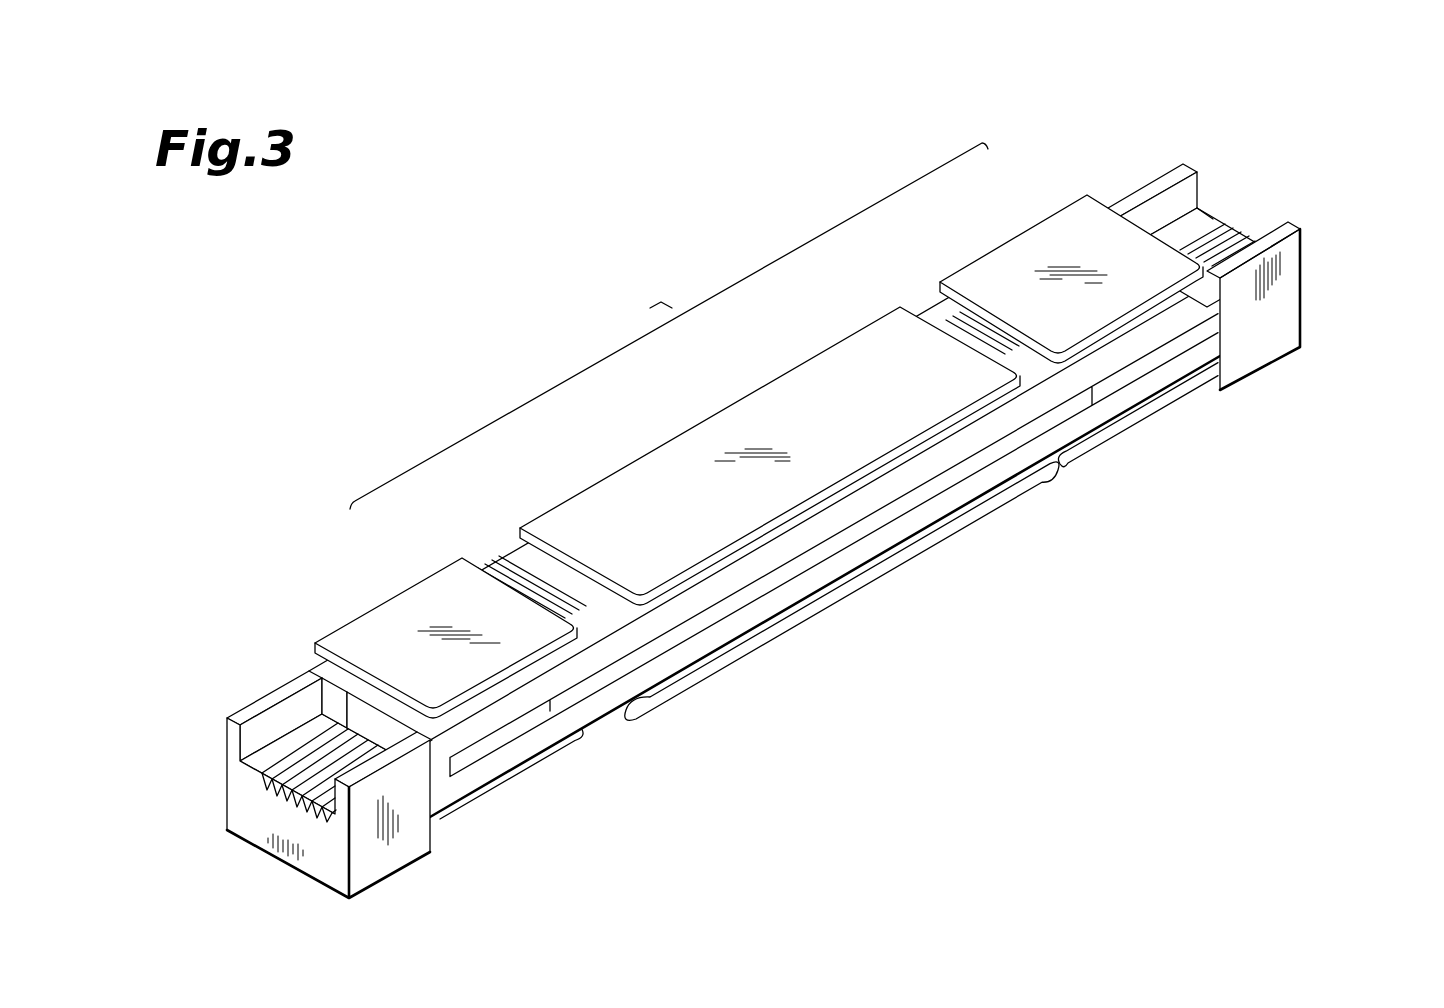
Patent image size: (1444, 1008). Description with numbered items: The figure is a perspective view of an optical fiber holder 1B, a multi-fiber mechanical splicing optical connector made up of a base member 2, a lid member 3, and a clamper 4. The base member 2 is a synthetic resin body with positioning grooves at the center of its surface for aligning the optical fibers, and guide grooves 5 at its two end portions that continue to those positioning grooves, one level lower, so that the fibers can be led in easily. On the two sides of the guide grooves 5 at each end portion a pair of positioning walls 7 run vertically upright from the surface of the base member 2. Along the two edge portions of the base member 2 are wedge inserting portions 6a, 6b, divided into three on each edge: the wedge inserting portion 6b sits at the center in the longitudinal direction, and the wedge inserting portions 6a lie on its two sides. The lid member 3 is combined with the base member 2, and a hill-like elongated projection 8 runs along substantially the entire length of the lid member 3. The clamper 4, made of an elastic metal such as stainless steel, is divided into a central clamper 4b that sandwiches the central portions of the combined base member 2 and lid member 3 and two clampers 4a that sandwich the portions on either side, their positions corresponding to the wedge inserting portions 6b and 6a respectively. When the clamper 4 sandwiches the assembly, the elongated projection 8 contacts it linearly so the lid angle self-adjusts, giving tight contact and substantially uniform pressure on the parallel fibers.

The holder 1B is at (816, 487).
The base member 2 is at (1018, 455).
The lid member 3 is at (1052, 393).
The clamper 4 is at (669, 326).
The clampers 4a is at (452, 592).
The clamper 4b is at (777, 407).
The guide grooves 5 is at (263, 783).
The wedge inserting portions 6a is at (505, 740).
The wedge inserting portion 6b is at (880, 518).
The positioning walls 7 is at (277, 712).
The elongated projection 8 is at (547, 592).